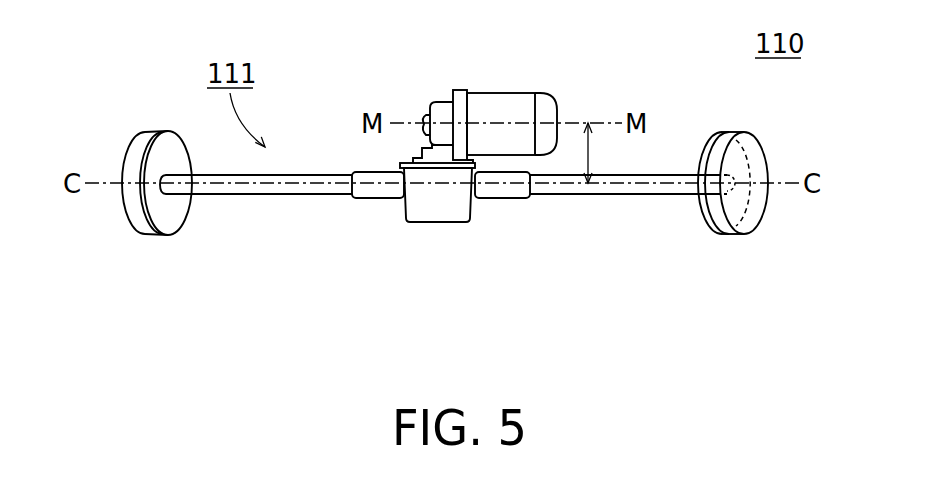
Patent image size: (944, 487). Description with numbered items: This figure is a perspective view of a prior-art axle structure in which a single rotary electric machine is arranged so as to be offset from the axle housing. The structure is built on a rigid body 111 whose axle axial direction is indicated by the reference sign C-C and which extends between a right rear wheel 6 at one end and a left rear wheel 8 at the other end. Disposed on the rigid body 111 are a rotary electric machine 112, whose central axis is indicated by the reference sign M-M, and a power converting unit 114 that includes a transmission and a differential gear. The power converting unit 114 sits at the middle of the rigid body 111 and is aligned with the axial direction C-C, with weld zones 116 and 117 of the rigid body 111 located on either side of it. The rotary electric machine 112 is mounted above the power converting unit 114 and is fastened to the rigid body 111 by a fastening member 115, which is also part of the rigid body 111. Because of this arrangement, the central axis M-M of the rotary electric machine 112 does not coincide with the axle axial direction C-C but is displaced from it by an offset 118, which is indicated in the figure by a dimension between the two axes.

The right rear wheel 6 is at (139, 224).
The left rear wheel 8 is at (750, 235).
The rigid body 111 is at (444, 184).
The rotary electric machine 112 is at (504, 103).
The power converting unit 114 is at (444, 207).
The fastening member 115 is at (403, 150).
The weld zone 116 is at (354, 204).
The weld zone 117 is at (526, 204).
The offset 118 is at (592, 150).